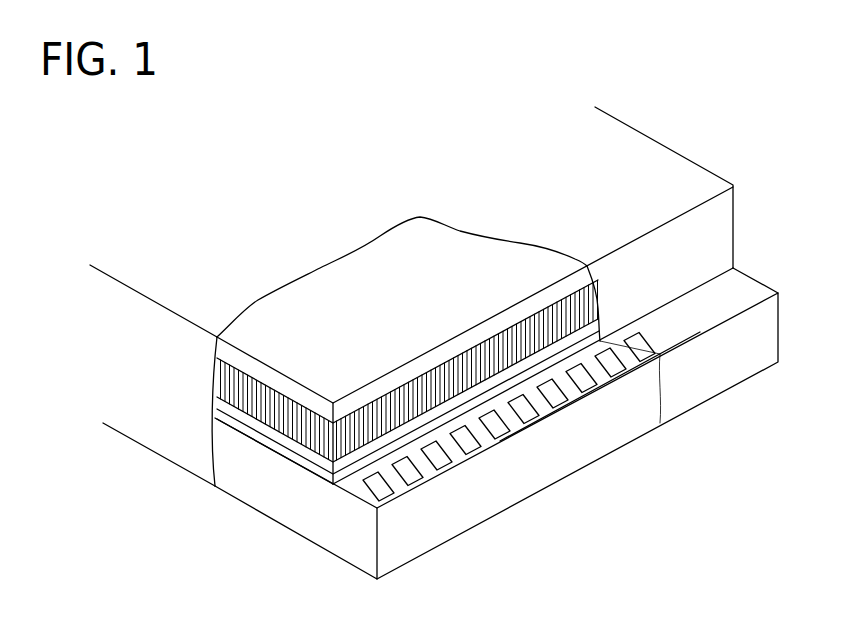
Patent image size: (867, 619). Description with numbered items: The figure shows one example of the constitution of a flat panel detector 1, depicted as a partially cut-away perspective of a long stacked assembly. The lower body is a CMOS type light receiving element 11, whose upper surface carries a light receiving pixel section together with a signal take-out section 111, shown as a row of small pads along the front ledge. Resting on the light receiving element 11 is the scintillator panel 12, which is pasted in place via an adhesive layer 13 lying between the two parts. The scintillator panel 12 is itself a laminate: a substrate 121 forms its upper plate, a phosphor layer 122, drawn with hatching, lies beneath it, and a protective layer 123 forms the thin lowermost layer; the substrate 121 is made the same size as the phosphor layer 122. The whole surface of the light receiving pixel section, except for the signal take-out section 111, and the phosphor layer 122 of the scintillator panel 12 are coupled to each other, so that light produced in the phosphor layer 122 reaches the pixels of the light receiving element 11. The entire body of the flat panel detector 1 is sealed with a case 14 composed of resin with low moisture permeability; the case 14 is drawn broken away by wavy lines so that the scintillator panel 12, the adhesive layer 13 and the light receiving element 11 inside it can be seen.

The flat panel detector 1 is at (365, 115).
The light receiving element 11 is at (305, 513).
The signal take-out section 111 is at (522, 443).
The scintillator panel 12 is at (650, 188).
The substrate 121 is at (511, 262).
The phosphor layer 122 is at (576, 290).
The protective layer 123 is at (614, 318).
The adhesive layer 13 is at (593, 397).
The case 14 is at (187, 290).